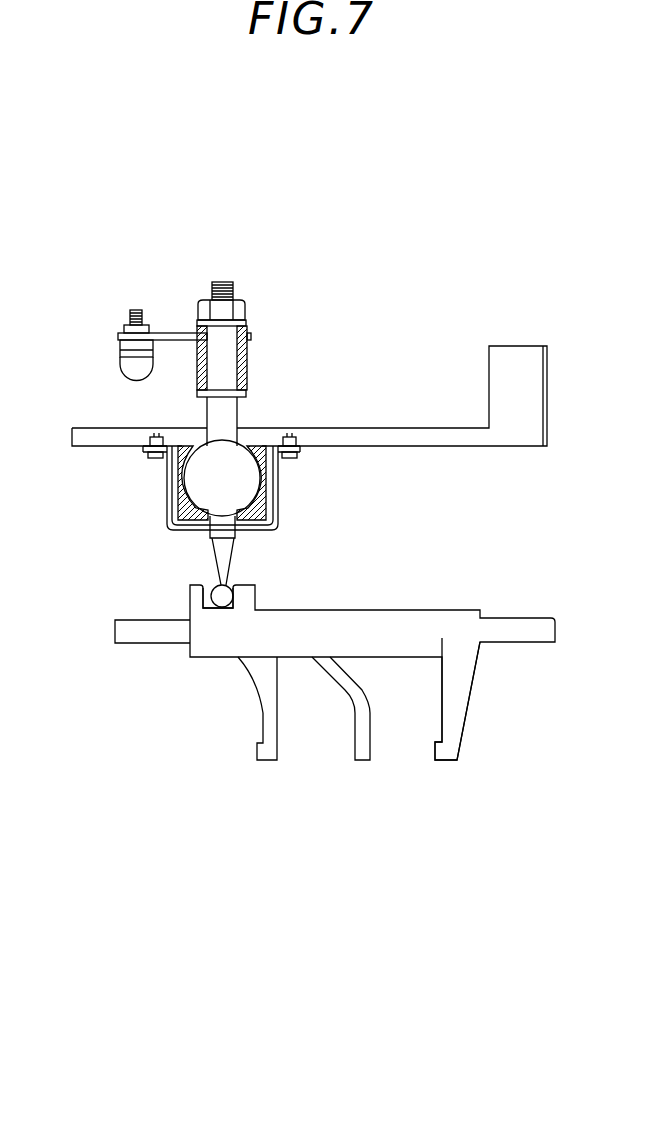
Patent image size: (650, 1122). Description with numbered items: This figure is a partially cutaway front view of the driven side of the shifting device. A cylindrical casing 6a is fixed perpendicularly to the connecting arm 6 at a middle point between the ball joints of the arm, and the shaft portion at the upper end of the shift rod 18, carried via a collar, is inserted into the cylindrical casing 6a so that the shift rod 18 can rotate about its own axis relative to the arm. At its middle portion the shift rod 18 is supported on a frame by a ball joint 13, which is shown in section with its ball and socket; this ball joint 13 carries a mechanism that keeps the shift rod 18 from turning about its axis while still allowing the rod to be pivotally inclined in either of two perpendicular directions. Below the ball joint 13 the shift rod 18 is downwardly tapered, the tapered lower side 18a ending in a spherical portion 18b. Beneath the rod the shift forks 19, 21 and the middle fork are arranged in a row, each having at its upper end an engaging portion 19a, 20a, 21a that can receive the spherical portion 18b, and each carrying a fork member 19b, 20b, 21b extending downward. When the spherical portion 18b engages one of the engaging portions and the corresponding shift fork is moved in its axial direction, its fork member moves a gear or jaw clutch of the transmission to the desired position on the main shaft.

The connecting arm 6 is at (170, 333).
The cylindrical casing 6a is at (245, 360).
The ball joint 13 is at (205, 482).
The shift rod 18 is at (225, 415).
The tapered end of shift rod 18a is at (217, 558).
The spherical portion 18b is at (226, 592).
The shift fork 19 is at (307, 659).
The shift fork 21 is at (196, 678).
The engaging portion 19a is at (328, 579).
The engaging portion 20a is at (328, 579).
The engaging portion 21a is at (266, 593).
The fork member 19b is at (445, 760).
The fork member 20b is at (360, 760).
The fork member 21b is at (265, 760).